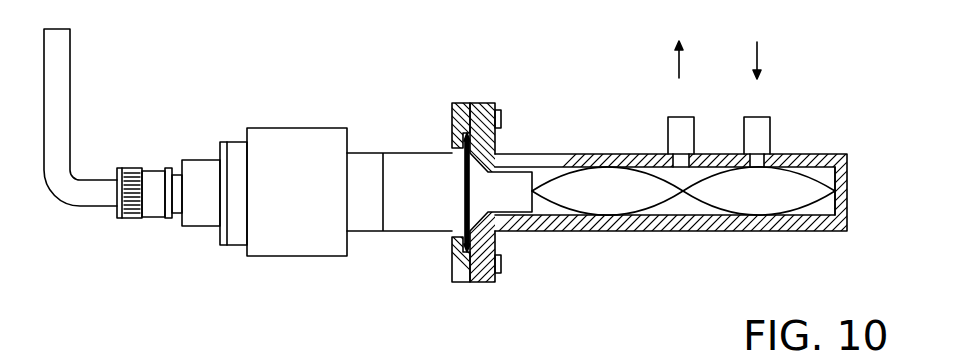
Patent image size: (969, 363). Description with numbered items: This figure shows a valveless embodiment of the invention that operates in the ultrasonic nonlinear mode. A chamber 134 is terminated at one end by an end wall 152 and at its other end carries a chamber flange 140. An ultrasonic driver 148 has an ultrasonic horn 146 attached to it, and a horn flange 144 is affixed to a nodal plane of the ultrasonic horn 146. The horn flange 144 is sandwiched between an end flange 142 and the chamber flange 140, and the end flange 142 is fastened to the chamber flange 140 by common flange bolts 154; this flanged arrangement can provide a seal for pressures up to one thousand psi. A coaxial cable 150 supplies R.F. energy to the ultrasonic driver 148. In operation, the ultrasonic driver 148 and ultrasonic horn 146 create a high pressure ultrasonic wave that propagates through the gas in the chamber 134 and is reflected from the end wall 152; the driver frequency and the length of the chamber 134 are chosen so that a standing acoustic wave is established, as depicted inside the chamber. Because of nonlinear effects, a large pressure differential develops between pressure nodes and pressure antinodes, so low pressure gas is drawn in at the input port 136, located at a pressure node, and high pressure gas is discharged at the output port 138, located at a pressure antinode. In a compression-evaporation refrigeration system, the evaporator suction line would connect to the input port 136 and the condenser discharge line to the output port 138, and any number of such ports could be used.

The chamber 134 is at (632, 232).
The input port 136 is at (753, 167).
The output port 138 is at (680, 160).
The chamber flange 140 is at (480, 103).
The end flange 142 is at (450, 255).
The horn flange 144 is at (472, 193).
The ultrasonic horn 146 is at (422, 178).
The ultrasonic driver 148 is at (297, 160).
The coaxial cable 150 is at (55, 97).
The end wall 152 is at (835, 183).
The flange bolts 154 is at (503, 105).